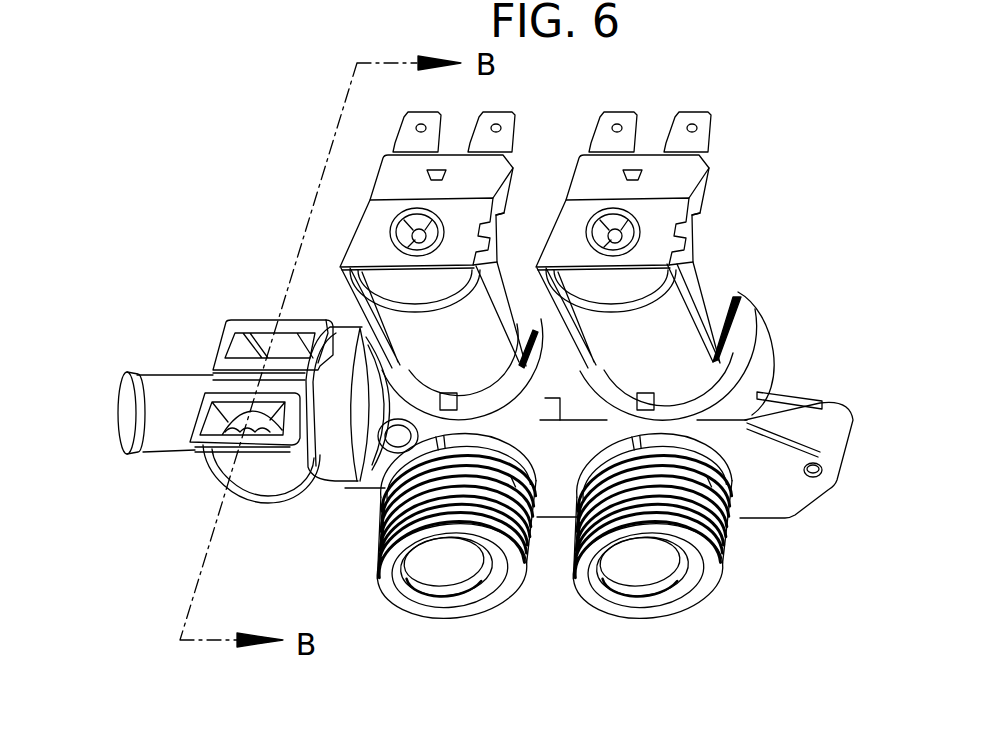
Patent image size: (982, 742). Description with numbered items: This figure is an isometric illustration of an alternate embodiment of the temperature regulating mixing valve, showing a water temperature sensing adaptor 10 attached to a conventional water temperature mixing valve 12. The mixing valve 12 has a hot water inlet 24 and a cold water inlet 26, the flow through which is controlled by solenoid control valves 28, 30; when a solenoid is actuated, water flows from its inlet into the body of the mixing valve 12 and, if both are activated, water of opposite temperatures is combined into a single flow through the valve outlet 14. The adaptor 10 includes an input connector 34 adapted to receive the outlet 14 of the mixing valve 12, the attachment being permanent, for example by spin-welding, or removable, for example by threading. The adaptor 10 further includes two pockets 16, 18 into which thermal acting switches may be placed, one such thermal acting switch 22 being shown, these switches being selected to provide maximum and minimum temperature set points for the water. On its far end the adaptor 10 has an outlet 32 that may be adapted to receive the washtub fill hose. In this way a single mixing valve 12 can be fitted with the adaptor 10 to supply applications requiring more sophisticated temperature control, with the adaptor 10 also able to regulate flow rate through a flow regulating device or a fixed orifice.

The water temperature sensing adaptor 10 is at (167, 388).
The water temperature mixing valve 12 is at (757, 372).
The outlet 14 is at (376, 437).
The pocket 16 is at (228, 320).
The pocket 18 is at (308, 484).
The thermal acting switch 22 is at (290, 480).
The hot water inlet 24 is at (461, 618).
The cold water inlet 26 is at (658, 618).
The solenoid control valve 28 is at (467, 217).
The solenoid control valve 30 is at (660, 217).
The outlet 32 is at (120, 414).
The input connector 34 is at (334, 438).